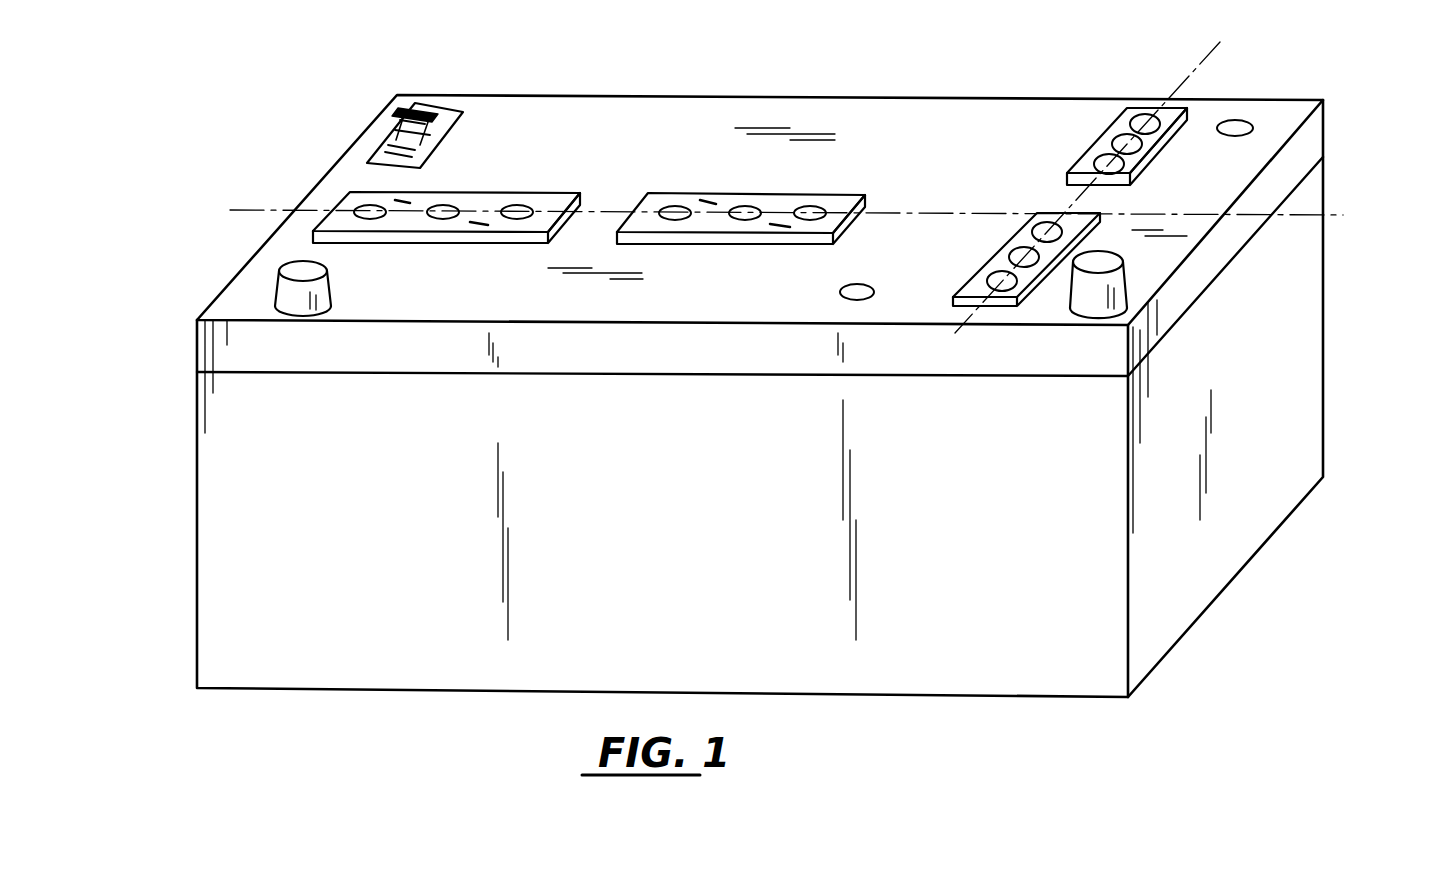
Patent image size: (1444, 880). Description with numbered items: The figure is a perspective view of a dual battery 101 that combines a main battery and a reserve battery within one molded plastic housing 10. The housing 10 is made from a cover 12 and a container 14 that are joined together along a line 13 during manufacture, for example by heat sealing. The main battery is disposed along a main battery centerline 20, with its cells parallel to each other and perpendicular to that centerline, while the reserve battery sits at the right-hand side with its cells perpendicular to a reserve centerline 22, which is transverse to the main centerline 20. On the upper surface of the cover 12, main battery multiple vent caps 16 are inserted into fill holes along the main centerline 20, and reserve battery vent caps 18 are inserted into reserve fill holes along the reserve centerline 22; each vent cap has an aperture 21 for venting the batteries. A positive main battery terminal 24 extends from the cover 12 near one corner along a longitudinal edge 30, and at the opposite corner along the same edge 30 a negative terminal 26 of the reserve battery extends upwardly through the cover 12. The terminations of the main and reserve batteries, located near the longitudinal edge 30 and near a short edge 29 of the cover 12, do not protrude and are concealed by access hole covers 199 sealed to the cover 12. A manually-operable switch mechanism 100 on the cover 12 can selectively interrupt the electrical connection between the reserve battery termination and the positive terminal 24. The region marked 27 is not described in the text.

The housing 10 is at (192, 647).
The cover 12 is at (773, 130).
The line 13 is at (435, 377).
The container 14 is at (1211, 423).
The main battery multiple vent caps 16 is at (485, 198).
The reserve battery vent caps 18 is at (1113, 122).
The main battery centerline 20 is at (1335, 215).
The aperture 21 is at (580, 207).
The reserve centerline 22 is at (1202, 57).
The positive main battery terminal 24 is at (280, 277).
The negative terminal 26 is at (1107, 260).
The cover corner 27 is at (262, 245).
The short edge 29 is at (1255, 180).
The longitudinal edge 30 is at (247, 325).
The switch mechanism 100 is at (377, 123).
The dual battery 101 is at (308, 160).
The access hole covers 199 is at (1238, 126).